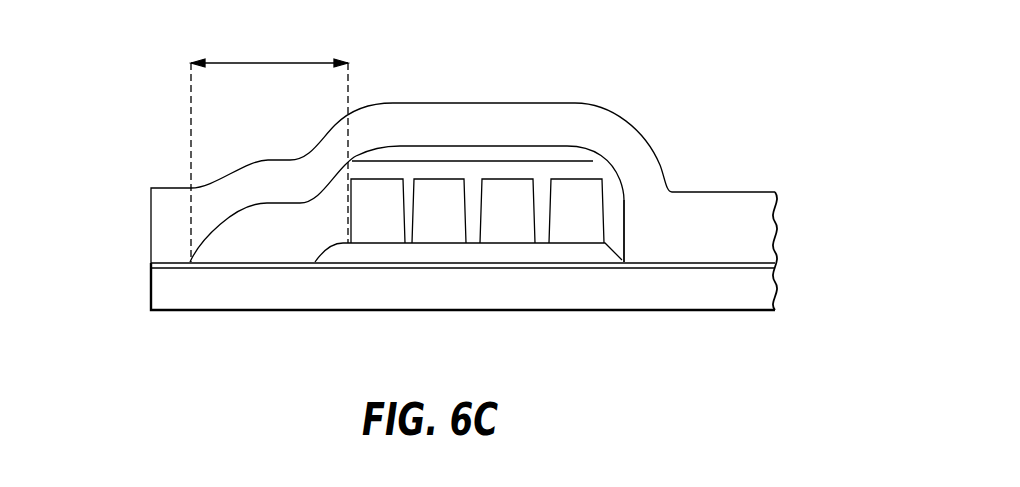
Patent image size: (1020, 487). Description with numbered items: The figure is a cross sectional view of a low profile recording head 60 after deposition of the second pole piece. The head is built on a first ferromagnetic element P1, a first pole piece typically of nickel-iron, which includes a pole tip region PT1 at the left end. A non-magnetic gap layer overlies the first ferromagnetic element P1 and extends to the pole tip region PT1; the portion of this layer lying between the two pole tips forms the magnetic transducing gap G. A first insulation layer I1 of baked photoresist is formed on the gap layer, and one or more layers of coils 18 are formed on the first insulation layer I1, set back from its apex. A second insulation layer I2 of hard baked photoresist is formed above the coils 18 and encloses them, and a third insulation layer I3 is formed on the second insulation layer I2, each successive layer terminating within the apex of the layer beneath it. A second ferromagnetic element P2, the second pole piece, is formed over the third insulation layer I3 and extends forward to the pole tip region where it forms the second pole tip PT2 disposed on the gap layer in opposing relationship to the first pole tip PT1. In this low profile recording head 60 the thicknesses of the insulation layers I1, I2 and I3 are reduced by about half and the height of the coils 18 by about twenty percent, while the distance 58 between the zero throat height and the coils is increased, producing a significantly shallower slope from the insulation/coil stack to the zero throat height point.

The distance between the head zero throat height and the coil 58 is at (269, 150).
The second pole tip PT2 is at (151, 220).
The magnetic transducing gap G is at (151, 267).
The pole tip region PT1 is at (151, 292).
The second insulation layer I2 is at (273, 245).
The first insulation layer I1 is at (535, 253).
The first ferromagnetic element P1 is at (643, 307).
The second ferromagnetic element P2 is at (435, 110).
The third insulation layer I3 is at (503, 152).
The coils 18 is at (566, 221).
The low profile recording head 60 is at (275, 385).